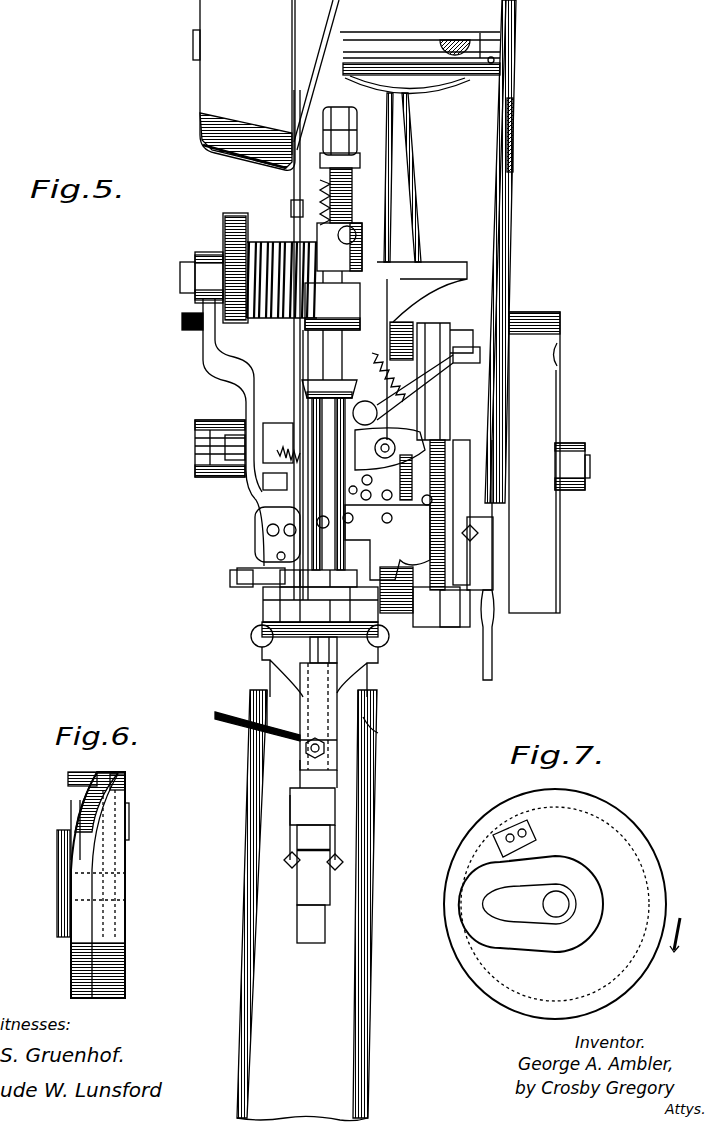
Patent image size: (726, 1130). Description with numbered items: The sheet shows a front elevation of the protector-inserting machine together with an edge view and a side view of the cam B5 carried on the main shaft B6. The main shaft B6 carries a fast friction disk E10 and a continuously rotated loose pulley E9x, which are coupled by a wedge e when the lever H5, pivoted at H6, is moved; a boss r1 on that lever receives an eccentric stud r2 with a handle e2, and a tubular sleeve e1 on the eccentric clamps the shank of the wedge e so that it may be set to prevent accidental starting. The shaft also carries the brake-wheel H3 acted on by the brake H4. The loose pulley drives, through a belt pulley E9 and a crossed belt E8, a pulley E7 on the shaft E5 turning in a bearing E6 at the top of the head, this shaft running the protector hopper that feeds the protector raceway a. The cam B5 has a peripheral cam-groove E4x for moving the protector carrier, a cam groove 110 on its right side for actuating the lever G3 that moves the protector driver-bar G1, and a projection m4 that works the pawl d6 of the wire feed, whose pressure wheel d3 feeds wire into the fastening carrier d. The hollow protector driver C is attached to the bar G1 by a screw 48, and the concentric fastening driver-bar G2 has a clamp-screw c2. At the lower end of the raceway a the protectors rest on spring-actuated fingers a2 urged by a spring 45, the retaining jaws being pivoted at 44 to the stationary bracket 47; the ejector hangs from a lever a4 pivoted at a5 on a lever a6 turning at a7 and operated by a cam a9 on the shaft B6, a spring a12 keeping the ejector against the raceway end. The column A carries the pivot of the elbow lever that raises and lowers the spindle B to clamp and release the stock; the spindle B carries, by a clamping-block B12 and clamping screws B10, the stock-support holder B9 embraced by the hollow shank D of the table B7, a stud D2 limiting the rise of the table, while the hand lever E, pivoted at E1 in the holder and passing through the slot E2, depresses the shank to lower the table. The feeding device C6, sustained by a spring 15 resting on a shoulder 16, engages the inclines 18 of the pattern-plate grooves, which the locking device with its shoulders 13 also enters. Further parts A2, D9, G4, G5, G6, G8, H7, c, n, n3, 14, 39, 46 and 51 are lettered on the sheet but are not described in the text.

In FIG. 5, the column A is at (372, 814).
In FIG. 5, the frame arm A2 is at (204, 355).
In FIG. 5, the spindle B is at (300, 826).
In FIG. 6, the cam B5 is at (68, 780).
In FIG. 7, the cam B5 is at (495, 808).
In FIG. 5, the main shaft B6 is at (592, 470).
In FIG. 5, the stock-support B7 is at (262, 641).
In FIG. 5, the stock-support holder B9 is at (300, 802).
In FIG. 5, the clamping screws B10 is at (284, 861).
In FIG. 5, the clamping-block B12 is at (345, 838).
In FIG. 5, the protector driver C is at (250, 917).
In FIG. 5, the feeding device C6 is at (338, 627).
In FIG. 5, the hollow shank D is at (300, 667).
In FIG. 5, the stud D2 is at (300, 762).
In FIG. 5, the carrier lug D9 is at (298, 650).
In FIG. 5, the hand operated lever E is at (248, 716).
In FIG. 5, the pivot E1 is at (318, 746).
In FIG. 5, the slot E2 is at (304, 750).
In FIG. 6, the cam-groove E4x is at (70, 811).
In FIG. 5, the shaft E5 is at (458, 40).
In FIG. 5, the bearing E6 is at (398, 35).
In FIG. 5, the pulley E7 is at (506, 100).
In FIG. 5, the crossed belt E8 is at (502, 210).
In FIG. 5, the belt pulley E9 is at (502, 430).
In FIG. 5, the loose pulley E9x is at (538, 314).
In FIG. 5, the friction disk E10 is at (560, 350).
In FIG. 5, the protector driver-bar G1 is at (360, 353).
In FIG. 5, the fastening driver-bar G2 is at (350, 202).
In FIG. 5, the lever G3 is at (385, 243).
In FIG. 5, the pulley G4 is at (180, 272).
In FIG. 5, the spring G5 is at (262, 240).
In FIG. 5, the spindle head G6 is at (360, 140).
In FIG. 5, the spring catch G8 is at (320, 186).
In FIG. 5, the brake-wheel H3 is at (418, 335).
In FIG. 5, the brake H4 is at (450, 392).
In FIG. 5, the lever H5 is at (438, 636).
In FIG. 5, the pivot H6 is at (290, 602).
In FIG. 5, the bracket plate H7 is at (292, 617).
In FIG. 5, the protector raceway a is at (322, 350).
In FIG. 5, the spring-actuated fingers a2 is at (268, 600).
In FIG. 5, the lever a4 is at (300, 497).
In FIG. 5, the pivot a5 is at (285, 470).
In FIG. 5, the lever a6 is at (208, 462).
In FIG. 5, the pivot a7 is at (200, 441).
In FIG. 5, the cam a9 is at (368, 476).
In FIG. 6, the cam a9 is at (58, 913).
In FIG. 5, the spring a12 is at (295, 490).
In FIG. 5, the rod c is at (338, 572).
In FIG. 5, the clamp-screw c2 is at (300, 417).
In FIG. 5, the fastening carrier d is at (390, 440).
In FIG. 5, the pressure wheel d3 is at (368, 462).
In FIG. 5, the pawl d6 is at (400, 440).
In FIG. 5, the wedge e is at (478, 430).
In FIG. 5, the tubular sleeve e1 is at (490, 567).
In FIG. 5, the handle e2 is at (495, 656).
In FIG. 6, the projection m4 is at (129, 810).
In FIG. 7, the projection m4 is at (496, 848).
In FIG. 5, the cam plate n is at (396, 562).
In FIG. 5, the cam block n3 is at (410, 627).
In FIG. 5, the boss r1 is at (452, 660).
In FIG. 5, the eccentric stud r2 is at (497, 617).
In FIG. 5, the shoulders 13 is at (305, 690).
In FIG. 5, the block 14 is at (345, 647).
In FIG. 5, the spring 15 is at (366, 530).
In FIG. 5, the shoulder 16 is at (366, 545).
In FIG. 5, the inclines 18 is at (462, 538).
In FIG. 5, the block 39 is at (238, 582).
In FIG. 5, the pivot 44 is at (350, 512).
In FIG. 5, the spring 45 is at (278, 548).
In FIG. 5, the clamp screw 46 is at (284, 519).
In FIG. 5, the stationary bracket 47 is at (273, 530).
In FIG. 5, the screw 48 is at (372, 517).
In FIG. 5, the collar 51 is at (355, 240).
In FIG. 7, the cam groove 110 is at (480, 890).